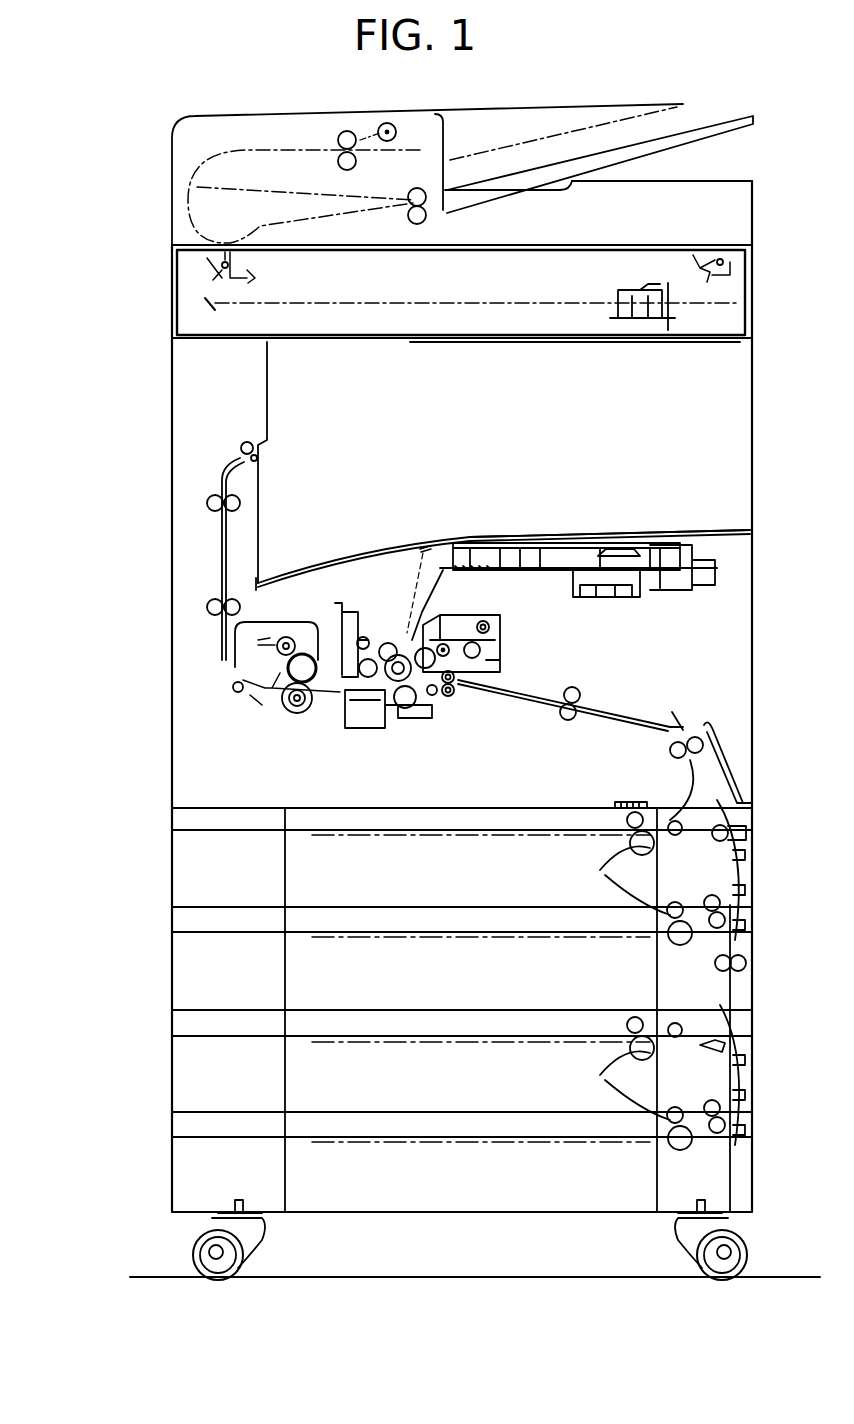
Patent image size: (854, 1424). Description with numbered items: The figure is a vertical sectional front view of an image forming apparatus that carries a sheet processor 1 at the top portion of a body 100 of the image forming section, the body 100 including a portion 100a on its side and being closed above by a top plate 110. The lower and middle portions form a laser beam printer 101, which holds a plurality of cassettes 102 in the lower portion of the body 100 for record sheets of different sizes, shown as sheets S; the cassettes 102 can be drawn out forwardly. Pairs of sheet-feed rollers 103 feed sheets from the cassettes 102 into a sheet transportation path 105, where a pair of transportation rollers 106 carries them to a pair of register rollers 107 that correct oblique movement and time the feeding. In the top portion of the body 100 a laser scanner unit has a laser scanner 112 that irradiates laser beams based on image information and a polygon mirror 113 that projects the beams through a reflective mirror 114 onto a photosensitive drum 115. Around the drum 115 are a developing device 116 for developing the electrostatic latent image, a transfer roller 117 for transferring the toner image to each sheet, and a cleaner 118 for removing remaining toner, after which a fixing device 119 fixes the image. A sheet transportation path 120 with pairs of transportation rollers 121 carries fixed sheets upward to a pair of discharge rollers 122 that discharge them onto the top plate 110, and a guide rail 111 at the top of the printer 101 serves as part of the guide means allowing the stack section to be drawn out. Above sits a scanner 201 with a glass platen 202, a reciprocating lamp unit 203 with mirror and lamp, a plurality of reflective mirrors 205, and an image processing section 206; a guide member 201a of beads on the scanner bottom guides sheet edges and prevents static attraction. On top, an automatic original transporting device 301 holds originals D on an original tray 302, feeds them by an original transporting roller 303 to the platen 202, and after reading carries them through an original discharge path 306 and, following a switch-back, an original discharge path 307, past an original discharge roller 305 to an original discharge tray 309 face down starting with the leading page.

The sheet processor 1 is at (290, 368).
The body of image forming section 100 is at (172, 790).
The side frame of printer body 100a is at (267, 395).
The laser beam printer 101 is at (165, 745).
The cassettes 102 is at (292, 1163).
The pairs of sheet-feed rollers 103 is at (630, 852).
The sheet transportation path 105 is at (753, 862).
The pair of transportation rollers 106 is at (572, 687).
The pair of register rollers 107 is at (450, 698).
The top plate 110 is at (310, 560).
The guide rail 111 is at (712, 532).
The laser scanner 112 is at (503, 546).
The polygon mirror 113 is at (660, 590).
The reflective mirror 114 is at (424, 546).
The photosensitive drum 115 is at (398, 652).
The developing device 116 is at (483, 622).
The transfer roller 117 is at (405, 709).
The cleaner 118 is at (368, 628).
The fixing device 119 is at (303, 714).
The sheet transportation path 120 is at (222, 560).
The pairs of transportation rollers 121 is at (207, 503).
The pair of discharge rollers 122 is at (241, 447).
The scanner 201 is at (165, 292).
The guide member 201a is at (685, 350).
The platen 202 is at (673, 247).
The lamp unit 203 is at (207, 268).
The reflective mirrors 205 is at (205, 300).
The image processing section 206 is at (608, 290).
The automatic original transporting device 301 is at (165, 190).
The original tray 302 is at (720, 128).
The original transporting roller 303 is at (347, 132).
The original discharge roller 305 is at (425, 218).
The original discharge path 306 is at (253, 187).
The original discharge path 307 is at (283, 218).
The original discharge tray 309 is at (565, 180).
The originals D is at (535, 142).
The sheets S is at (418, 937).